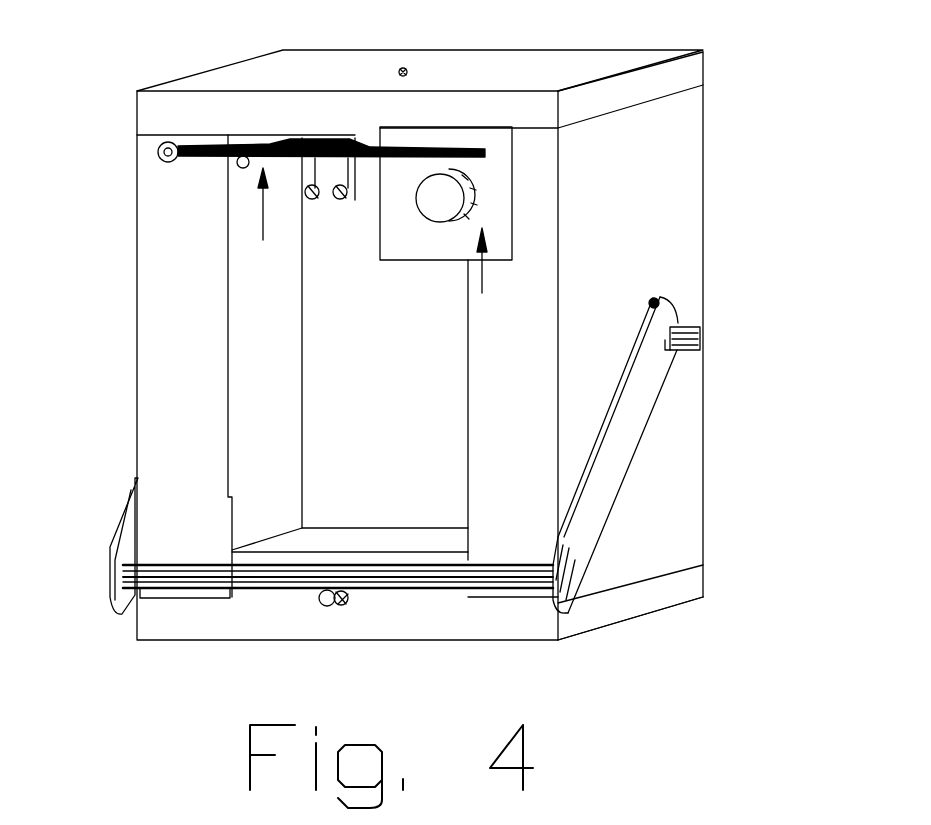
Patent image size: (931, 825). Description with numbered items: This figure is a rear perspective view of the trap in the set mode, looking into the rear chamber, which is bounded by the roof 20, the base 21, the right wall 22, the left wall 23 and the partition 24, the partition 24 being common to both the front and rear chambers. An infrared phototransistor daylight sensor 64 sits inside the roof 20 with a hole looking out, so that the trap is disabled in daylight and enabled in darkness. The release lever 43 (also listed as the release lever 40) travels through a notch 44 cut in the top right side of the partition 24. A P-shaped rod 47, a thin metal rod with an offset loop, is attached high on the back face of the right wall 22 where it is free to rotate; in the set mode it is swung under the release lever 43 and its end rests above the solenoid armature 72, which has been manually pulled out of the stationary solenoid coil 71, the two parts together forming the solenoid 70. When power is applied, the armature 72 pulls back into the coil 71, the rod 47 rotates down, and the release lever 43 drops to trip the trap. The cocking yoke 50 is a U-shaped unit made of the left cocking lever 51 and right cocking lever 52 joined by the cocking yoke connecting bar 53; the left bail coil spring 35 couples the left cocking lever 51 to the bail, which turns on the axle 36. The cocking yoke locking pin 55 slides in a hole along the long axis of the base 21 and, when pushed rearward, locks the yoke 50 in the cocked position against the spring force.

The roof 20 is at (587, 62).
The base 21 is at (460, 623).
The right wall 22 is at (243, 297).
The left wall 23 is at (657, 273).
The partition 24 is at (400, 402).
The left bail coil spring 35 is at (655, 303).
The axle 36 is at (700, 350).
The release lever 40 is at (125, 311).
The release lever 43 is at (242, 170).
The notch in the partition for the release lever 44 is at (352, 238).
The P-shaped rod 47 is at (200, 160).
The cocking yoke 50 is at (755, 448).
The left cocking lever 51 is at (615, 460).
The right cocking lever 52 is at (130, 479).
The cocking yoke connecting bar 53 is at (427, 570).
The cocking yoke locking pin 55 is at (320, 600).
The infrared phototransistor daylight sensor 64 is at (400, 72).
The solenoid 70 is at (503, 337).
The solenoid coil 71 is at (423, 248).
The solenoid armature 72 is at (448, 197).